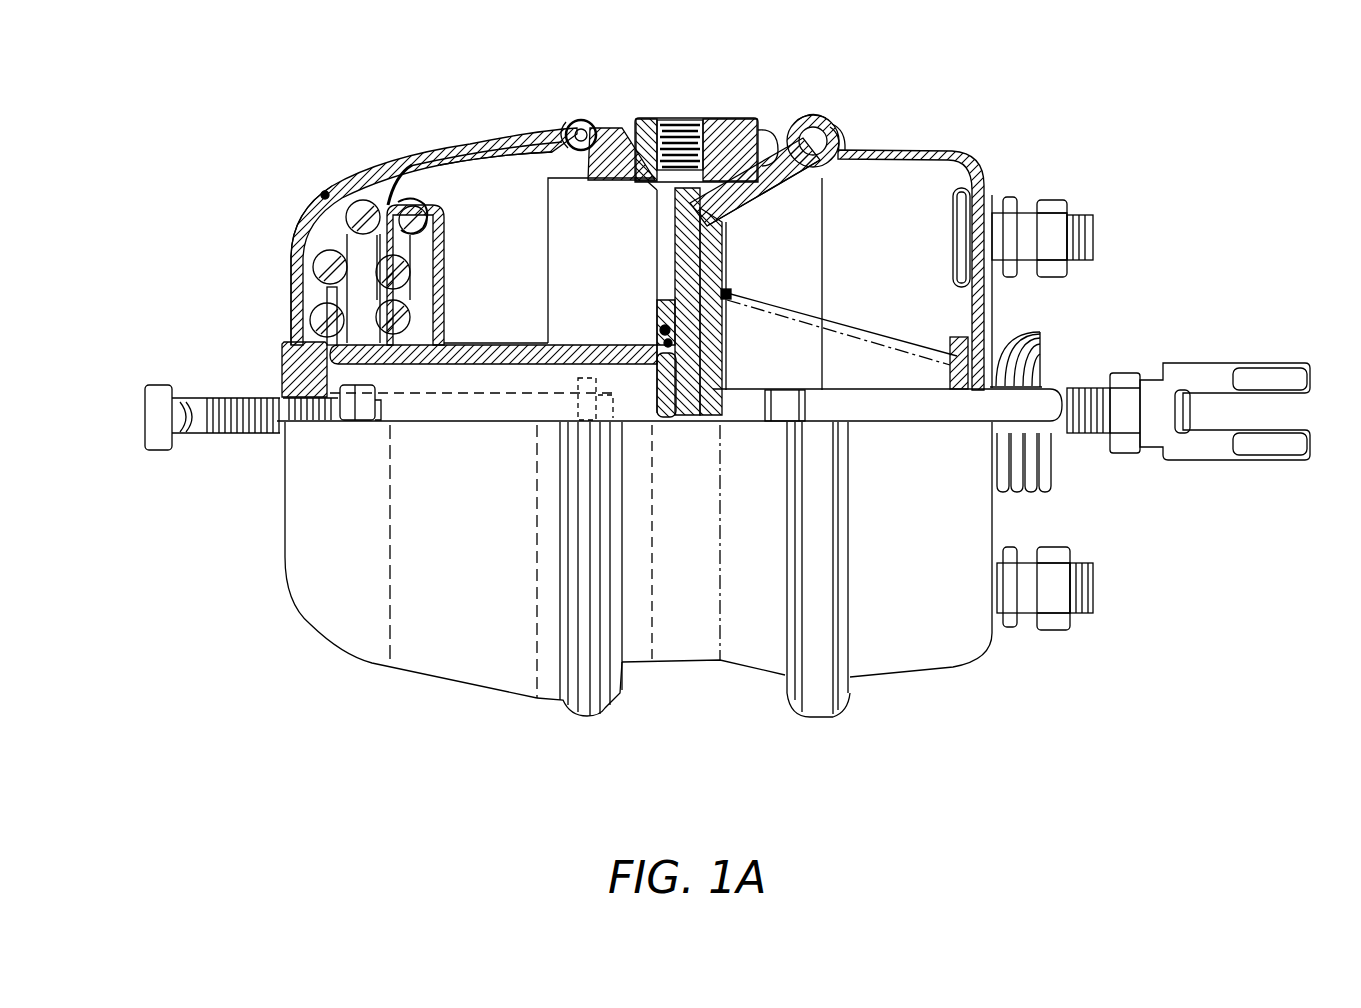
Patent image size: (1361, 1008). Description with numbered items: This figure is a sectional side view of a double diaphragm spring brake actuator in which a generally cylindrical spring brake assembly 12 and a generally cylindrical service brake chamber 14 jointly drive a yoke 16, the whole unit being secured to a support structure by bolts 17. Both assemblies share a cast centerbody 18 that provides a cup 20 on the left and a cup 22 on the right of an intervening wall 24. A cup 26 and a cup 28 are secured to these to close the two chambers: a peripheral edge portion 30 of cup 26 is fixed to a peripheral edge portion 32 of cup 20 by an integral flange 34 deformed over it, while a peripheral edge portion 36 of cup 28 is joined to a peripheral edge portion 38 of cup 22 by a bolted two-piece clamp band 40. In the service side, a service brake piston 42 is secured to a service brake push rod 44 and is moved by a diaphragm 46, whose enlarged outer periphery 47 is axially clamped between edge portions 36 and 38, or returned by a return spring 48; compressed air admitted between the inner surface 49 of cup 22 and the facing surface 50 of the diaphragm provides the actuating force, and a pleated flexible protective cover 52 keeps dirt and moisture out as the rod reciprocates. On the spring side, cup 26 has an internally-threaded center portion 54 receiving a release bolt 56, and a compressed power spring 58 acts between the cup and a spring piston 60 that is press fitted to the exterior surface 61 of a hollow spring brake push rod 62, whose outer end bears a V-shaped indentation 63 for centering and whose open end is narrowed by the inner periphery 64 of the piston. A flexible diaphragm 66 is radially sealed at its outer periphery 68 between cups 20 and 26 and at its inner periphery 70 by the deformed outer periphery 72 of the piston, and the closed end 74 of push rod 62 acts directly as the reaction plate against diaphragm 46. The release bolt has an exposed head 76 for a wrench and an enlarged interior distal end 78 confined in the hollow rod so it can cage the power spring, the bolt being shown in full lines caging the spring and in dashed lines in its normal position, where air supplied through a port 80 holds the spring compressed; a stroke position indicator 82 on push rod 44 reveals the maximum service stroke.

The spring brake assembly 12 is at (378, 128).
The service brake chamber 14 is at (945, 122).
The yoke 16 is at (1272, 355).
The bolts 17 is at (1100, 200).
The cast centerbody 18 is at (700, 672).
The cup 20 is at (617, 253).
The cup 22 is at (740, 175).
The intervening wall 24 is at (673, 277).
The cup 26 is at (290, 262).
The cup 28 is at (896, 268).
The peripheral edge portion 30 is at (560, 128).
The peripheral edge portion 32 is at (585, 118).
The integral flange 34 is at (622, 125).
The peripheral edge portion 36 is at (850, 142).
The peripheral edge portion 38 is at (788, 165).
The clamp band 40 is at (826, 130).
The service brake piston 42 is at (705, 343).
The service brake push rod 44 is at (900, 395).
The diaphragm 46 is at (778, 190).
The enlarged outer periphery 47 is at (815, 145).
The return spring 48 is at (890, 340).
The inner surface 49 is at (772, 168).
The facing surface 50 is at (745, 190).
The pleated flexible protective cover 52 is at (1040, 370).
The internally-threaded center portion 54 is at (300, 348).
The release bolt 56 is at (222, 462).
The power spring 58 is at (325, 195).
The spring piston 60 is at (447, 265).
The exterior surface 61 is at (510, 352).
The hollow spring brake push rod 62 is at (470, 338).
The V-shaped indentation 63 is at (660, 422).
The inner periphery 64 is at (385, 366).
The flexible diaphragm 66 is at (485, 165).
The outer periphery 68 is at (578, 150).
The inner periphery 70 is at (418, 230).
The outer periphery 72 is at (415, 200).
The closed end 74 is at (680, 382).
The exposed head 76 is at (160, 385).
The enlarged interior distal end 78 is at (357, 425).
The port 80 is at (678, 120).
The stroke position indicator 82 is at (782, 410).